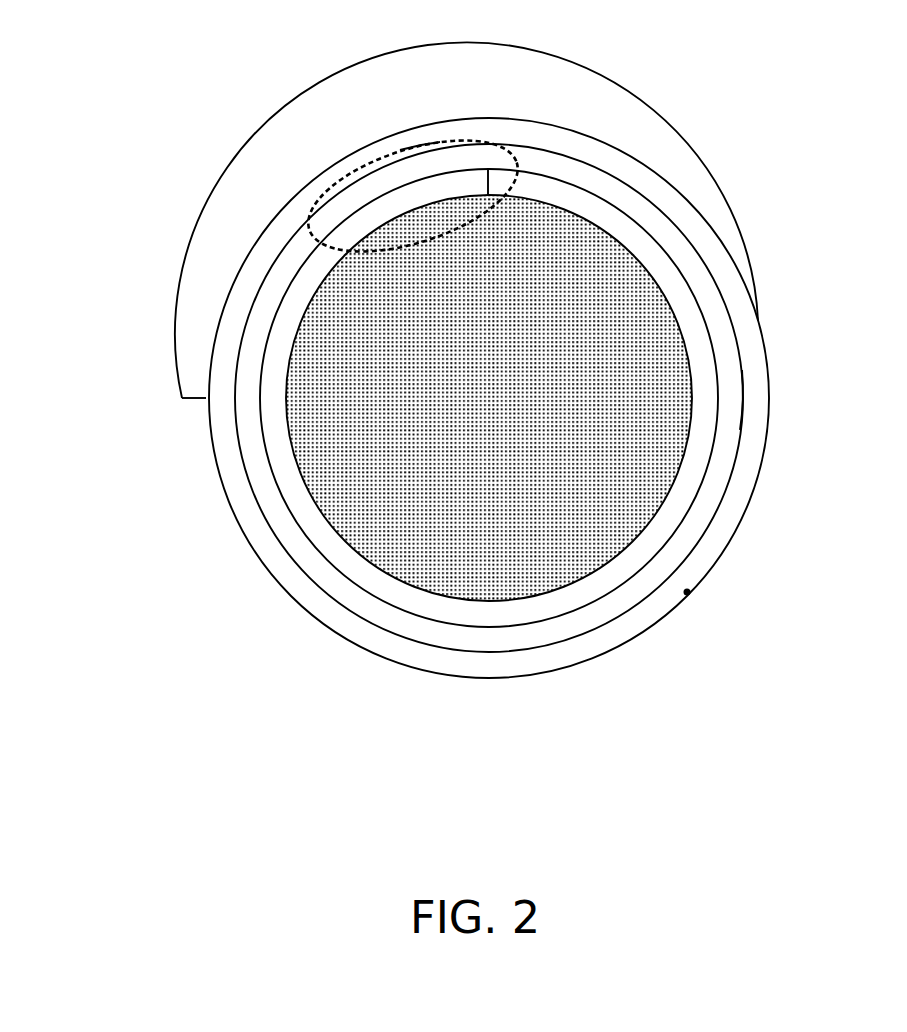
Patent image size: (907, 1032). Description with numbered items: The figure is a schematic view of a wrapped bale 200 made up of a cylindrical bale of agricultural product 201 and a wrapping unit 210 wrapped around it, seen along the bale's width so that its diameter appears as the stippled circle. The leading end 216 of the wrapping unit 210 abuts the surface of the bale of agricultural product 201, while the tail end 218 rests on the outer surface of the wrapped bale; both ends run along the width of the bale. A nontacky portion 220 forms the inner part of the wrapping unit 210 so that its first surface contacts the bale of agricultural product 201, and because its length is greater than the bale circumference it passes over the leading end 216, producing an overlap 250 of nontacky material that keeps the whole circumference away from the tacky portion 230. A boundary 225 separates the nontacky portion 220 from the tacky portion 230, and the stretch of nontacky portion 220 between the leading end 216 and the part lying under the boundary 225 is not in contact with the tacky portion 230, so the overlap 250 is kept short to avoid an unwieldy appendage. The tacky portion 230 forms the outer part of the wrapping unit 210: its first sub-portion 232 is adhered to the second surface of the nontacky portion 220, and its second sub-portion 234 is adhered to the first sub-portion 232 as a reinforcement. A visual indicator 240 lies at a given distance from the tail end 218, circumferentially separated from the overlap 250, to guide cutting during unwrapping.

The wrapped bale 200 is at (493, 760).
The bale of agricultural product 201 is at (350, 463).
The wrapping unit 210 is at (776, 190).
The leading end 216 is at (488, 170).
The tail end 218 is at (183, 399).
The nontacky portion 220 is at (270, 445).
The boundary 225 is at (332, 228).
The tacky portion 230 is at (258, 484).
The first sub-portion 232 is at (730, 387).
The second sub-portion 234 is at (752, 442).
The visual indicator 240 is at (687, 592).
The overlap 250 is at (418, 145).